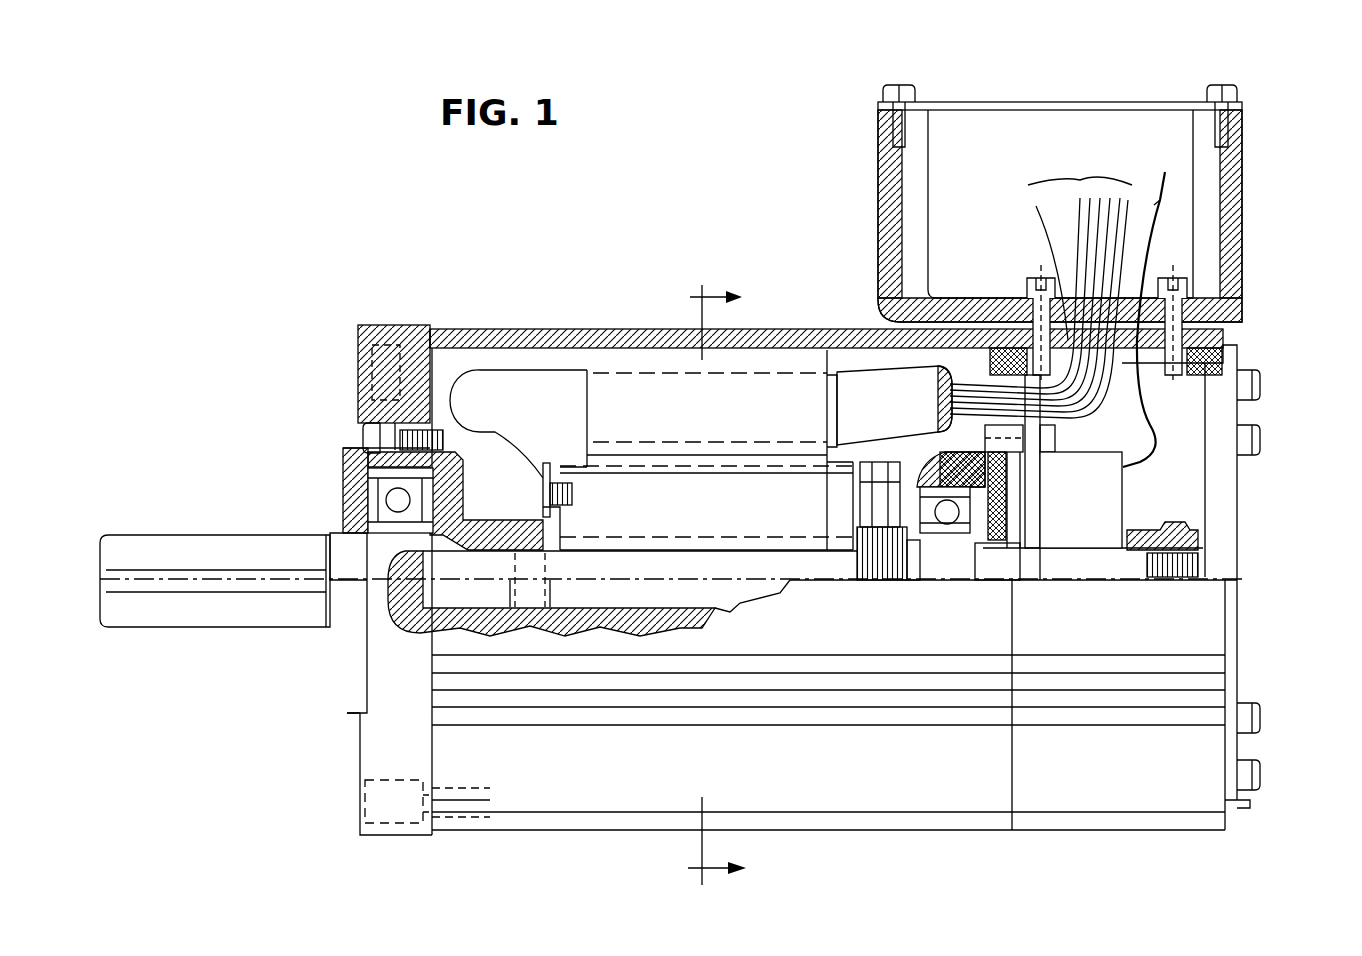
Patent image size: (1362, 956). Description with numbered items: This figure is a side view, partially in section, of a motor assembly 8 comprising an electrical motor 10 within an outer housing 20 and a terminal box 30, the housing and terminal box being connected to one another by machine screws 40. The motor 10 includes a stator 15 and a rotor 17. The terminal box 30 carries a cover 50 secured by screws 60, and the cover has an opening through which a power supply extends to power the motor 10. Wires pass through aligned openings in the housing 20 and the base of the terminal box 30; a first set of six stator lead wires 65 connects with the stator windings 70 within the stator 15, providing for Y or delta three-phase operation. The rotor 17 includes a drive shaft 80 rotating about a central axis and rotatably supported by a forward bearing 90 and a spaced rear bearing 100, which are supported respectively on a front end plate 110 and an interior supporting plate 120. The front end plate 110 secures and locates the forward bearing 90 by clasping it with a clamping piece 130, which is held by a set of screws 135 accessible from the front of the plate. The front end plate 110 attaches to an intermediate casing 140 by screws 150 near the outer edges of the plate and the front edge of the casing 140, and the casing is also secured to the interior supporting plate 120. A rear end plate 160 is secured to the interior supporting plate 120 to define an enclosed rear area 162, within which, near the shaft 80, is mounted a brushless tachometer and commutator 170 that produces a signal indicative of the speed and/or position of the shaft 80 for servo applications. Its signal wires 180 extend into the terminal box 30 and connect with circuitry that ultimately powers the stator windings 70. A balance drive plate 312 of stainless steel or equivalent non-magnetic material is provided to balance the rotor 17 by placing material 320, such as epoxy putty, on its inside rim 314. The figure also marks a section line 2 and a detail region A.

The motor assembly 8 is at (393, 268).
The electrical motor 10 is at (348, 744).
The stator 15 is at (666, 347).
The rotor 17 is at (518, 470).
The outer housing 20 is at (942, 802).
The terminal box 30 is at (1230, 62).
The machine screws 40 is at (1028, 282).
The cover 50 is at (966, 102).
The screws 60 is at (888, 94).
The stator lead wires 65 is at (1080, 175).
The stator windings 70 is at (641, 390).
The drive shaft 80 is at (294, 611).
The forward bearing 90 is at (400, 498).
The rear bearing 100 is at (968, 540).
The front end plate 110 is at (349, 505).
The interior supporting plate 120 is at (1005, 358).
The clamping piece 130 is at (358, 478).
The screws 135 is at (386, 432).
The intermediate casing 140 is at (476, 336).
The screws 150 is at (360, 368).
The rear end plate 160 is at (1225, 563).
The enclosed rear area 162 is at (1197, 385).
The brushless tachometer and commutator 170 is at (1105, 492).
The signal wires 180 is at (1158, 210).
The balance drive plate 312 is at (552, 527).
The inside rim 314 is at (541, 466).
The material 320 is at (549, 480).
The section line 2- 2 is at (704, 572).
The detail region A is at (1250, 806).